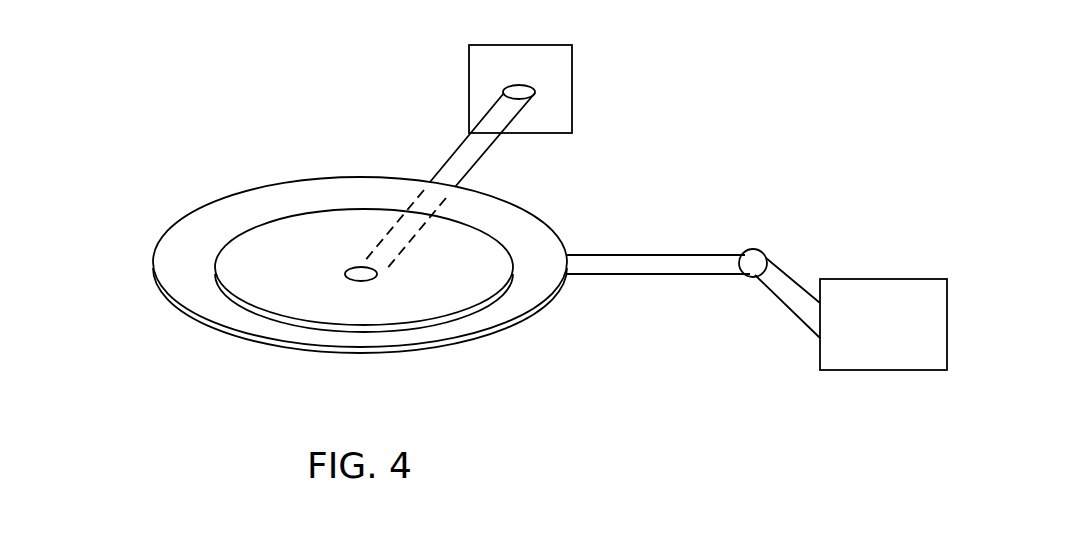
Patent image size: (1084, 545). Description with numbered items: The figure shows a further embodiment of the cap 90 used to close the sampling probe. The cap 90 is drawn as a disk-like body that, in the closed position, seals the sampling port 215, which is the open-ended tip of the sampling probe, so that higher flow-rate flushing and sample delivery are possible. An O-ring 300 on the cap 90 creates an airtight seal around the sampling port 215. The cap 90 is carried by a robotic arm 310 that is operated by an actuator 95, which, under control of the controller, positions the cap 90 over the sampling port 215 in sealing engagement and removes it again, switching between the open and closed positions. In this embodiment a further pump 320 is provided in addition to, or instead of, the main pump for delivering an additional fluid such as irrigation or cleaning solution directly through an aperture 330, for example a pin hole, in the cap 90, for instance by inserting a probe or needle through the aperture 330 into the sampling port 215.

The cap 90 is at (155, 294).
The sampling port 215 is at (413, 298).
The aperture 330 is at (350, 263).
The O-ring 300 is at (491, 231).
The further pump 320 is at (585, 68).
The robotic arm 310 is at (633, 283).
The actuator 95 is at (901, 270).